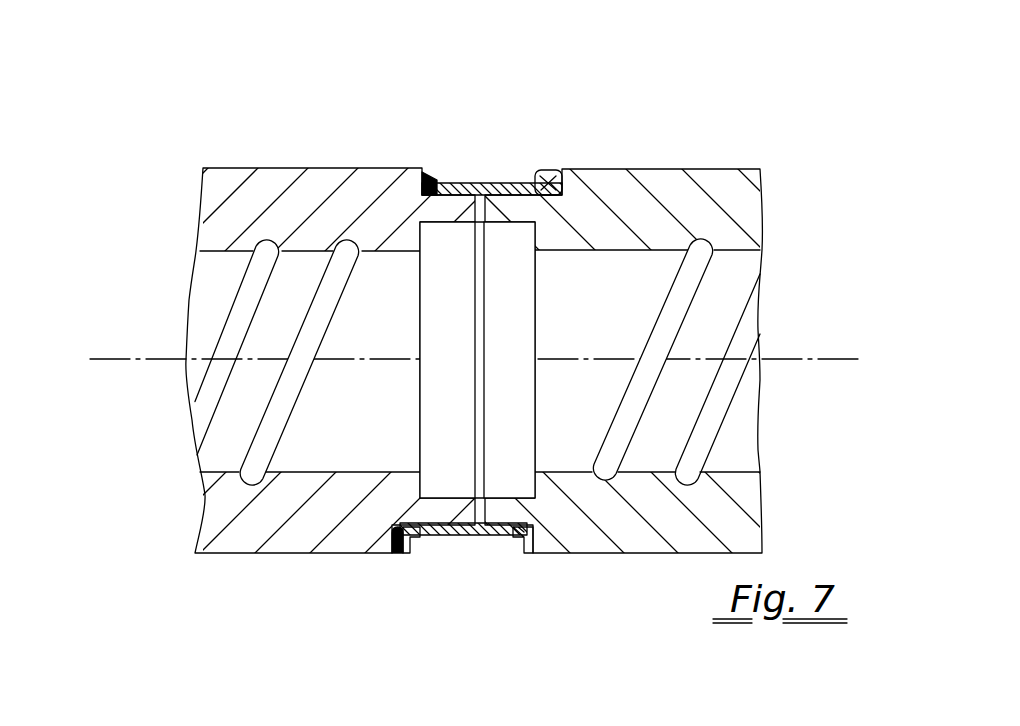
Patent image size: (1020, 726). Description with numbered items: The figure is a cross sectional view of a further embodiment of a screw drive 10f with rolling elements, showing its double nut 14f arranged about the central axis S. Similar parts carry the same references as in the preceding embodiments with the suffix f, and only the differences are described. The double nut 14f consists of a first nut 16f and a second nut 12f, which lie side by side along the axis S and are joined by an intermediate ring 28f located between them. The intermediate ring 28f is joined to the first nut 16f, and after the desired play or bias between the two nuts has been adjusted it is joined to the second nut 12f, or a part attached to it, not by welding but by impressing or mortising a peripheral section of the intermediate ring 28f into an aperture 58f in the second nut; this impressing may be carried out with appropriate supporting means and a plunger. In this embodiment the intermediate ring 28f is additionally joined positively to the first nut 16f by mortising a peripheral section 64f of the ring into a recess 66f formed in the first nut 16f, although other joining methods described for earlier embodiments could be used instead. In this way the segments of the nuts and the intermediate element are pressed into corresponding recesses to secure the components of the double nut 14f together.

The screw drive 10f is at (146, 105).
The double nut 14f is at (814, 75).
The first nut 16f is at (270, 180).
The second nut part 12f is at (670, 182).
The intermediate ring 28f is at (470, 190).
The aperture 58f is at (542, 168).
The peripheral section 64f is at (390, 548).
The recess 66f is at (411, 550).
The axis S is at (828, 360).